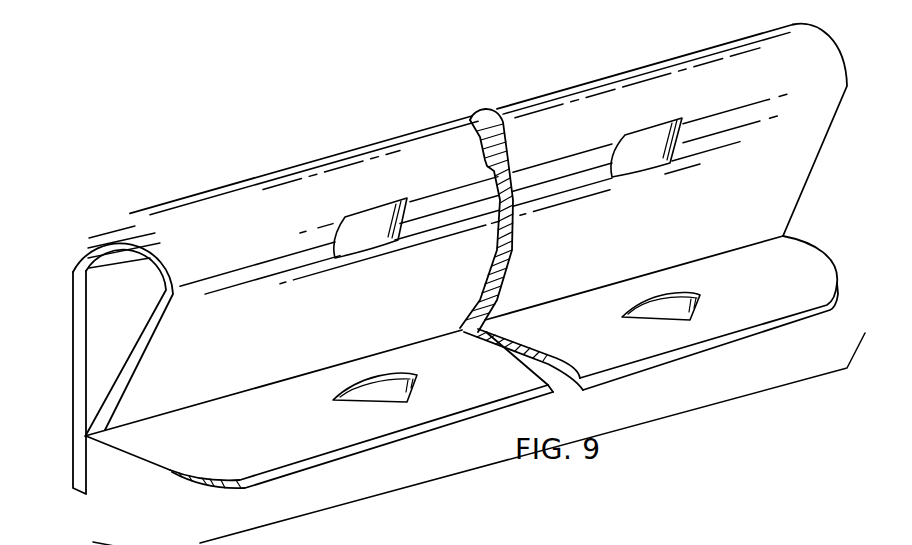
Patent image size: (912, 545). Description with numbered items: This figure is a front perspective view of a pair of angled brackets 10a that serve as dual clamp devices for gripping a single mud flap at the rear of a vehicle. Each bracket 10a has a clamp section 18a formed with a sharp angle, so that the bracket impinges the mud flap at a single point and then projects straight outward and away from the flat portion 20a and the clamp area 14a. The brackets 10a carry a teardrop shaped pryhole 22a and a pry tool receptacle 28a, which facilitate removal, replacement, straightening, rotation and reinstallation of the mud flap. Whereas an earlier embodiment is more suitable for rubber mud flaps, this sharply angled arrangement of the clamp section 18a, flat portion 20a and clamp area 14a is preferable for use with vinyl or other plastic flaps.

The bracket 10a is at (505, 107).
The clamp area 14a is at (95, 398).
The clamp section 18a is at (87, 437).
The flat portion 20a is at (73, 413).
The teardrop shaped pryhole 22a is at (328, 404).
The pry tool receptacle 28a is at (367, 225).